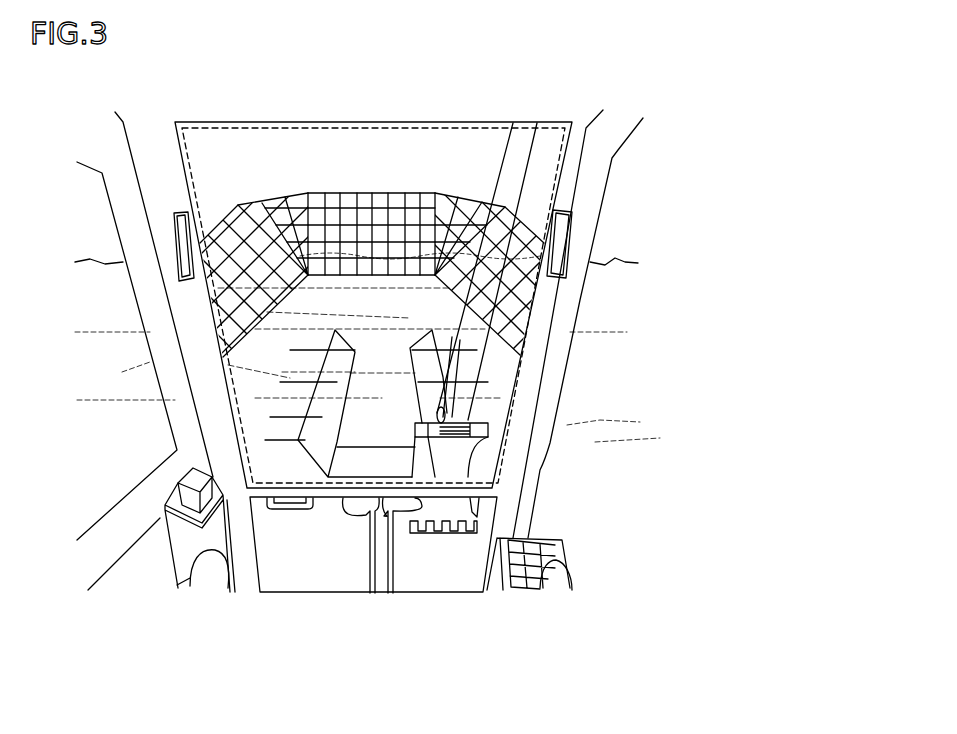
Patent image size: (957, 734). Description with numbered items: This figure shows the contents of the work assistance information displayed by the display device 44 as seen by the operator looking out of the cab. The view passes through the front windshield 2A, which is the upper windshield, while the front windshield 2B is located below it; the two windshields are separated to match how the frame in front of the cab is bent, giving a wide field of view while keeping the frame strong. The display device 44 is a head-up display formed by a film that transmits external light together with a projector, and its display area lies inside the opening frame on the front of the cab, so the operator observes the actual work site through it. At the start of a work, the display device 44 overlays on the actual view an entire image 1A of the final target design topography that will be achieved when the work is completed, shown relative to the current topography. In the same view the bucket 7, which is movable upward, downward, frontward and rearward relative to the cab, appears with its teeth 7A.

The front windshield 2A is at (204, 152).
The display device 44 is at (260, 126).
The entire image of final target design topography 1A is at (425, 184).
The bucket 7 is at (470, 432).
The front windshield 2B is at (280, 568).
The teeth 7A is at (457, 534).